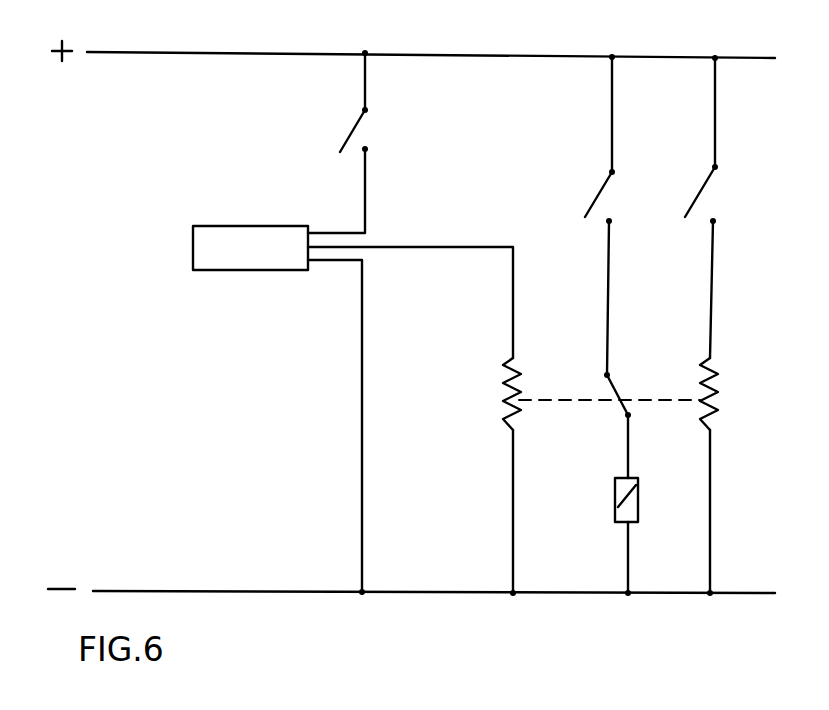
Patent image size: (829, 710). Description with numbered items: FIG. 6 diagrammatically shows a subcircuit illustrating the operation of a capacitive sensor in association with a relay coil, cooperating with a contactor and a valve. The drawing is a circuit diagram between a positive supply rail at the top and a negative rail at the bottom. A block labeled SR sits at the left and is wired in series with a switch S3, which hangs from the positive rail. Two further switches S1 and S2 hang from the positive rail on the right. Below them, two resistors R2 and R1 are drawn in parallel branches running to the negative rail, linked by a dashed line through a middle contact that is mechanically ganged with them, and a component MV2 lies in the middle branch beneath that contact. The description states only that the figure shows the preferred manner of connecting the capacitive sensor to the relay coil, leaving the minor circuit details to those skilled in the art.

The switch S3 is at (354, 143).
The series regulator SR is at (222, 223).
The resistor R2 is at (492, 394).
The resistor R1 is at (722, 394).
The switch S1 is at (614, 216).
The switch S2 is at (715, 208).
The metal oxide varistor MV2 is at (650, 535).